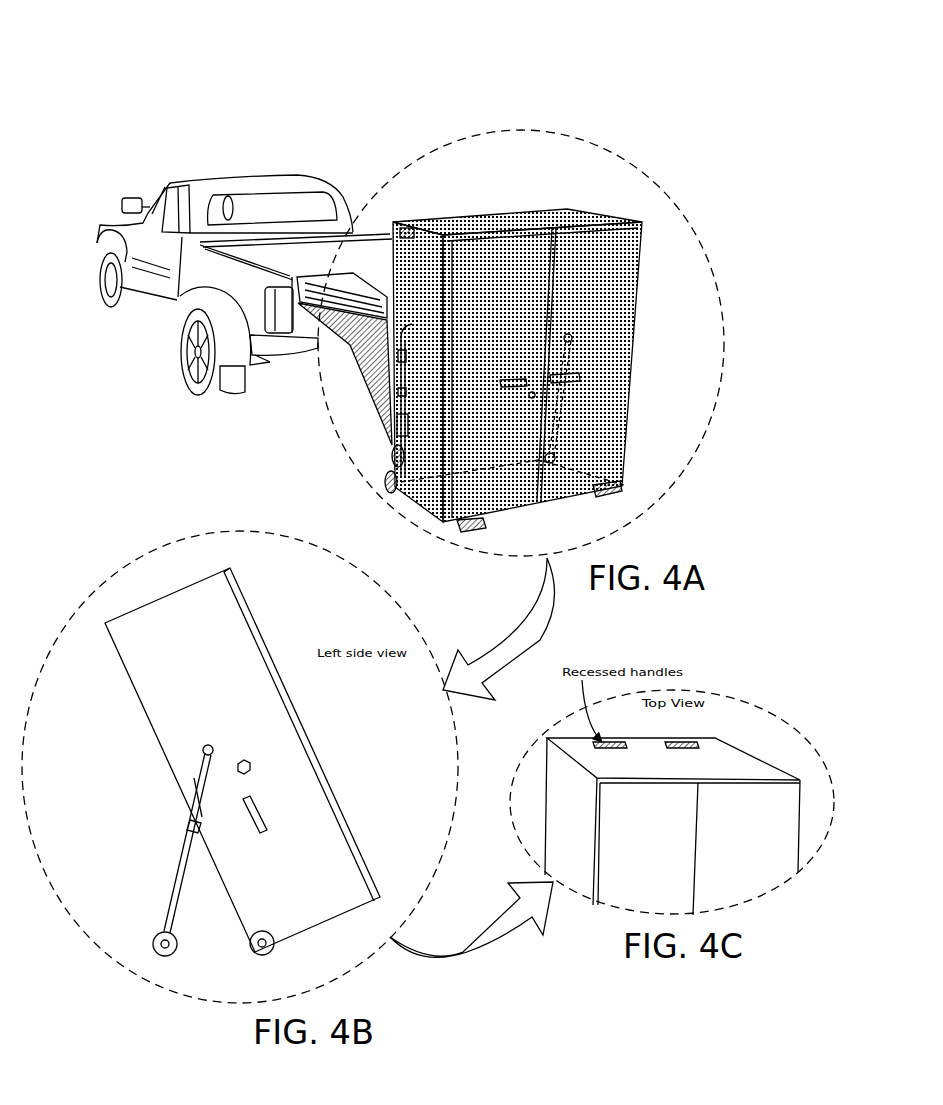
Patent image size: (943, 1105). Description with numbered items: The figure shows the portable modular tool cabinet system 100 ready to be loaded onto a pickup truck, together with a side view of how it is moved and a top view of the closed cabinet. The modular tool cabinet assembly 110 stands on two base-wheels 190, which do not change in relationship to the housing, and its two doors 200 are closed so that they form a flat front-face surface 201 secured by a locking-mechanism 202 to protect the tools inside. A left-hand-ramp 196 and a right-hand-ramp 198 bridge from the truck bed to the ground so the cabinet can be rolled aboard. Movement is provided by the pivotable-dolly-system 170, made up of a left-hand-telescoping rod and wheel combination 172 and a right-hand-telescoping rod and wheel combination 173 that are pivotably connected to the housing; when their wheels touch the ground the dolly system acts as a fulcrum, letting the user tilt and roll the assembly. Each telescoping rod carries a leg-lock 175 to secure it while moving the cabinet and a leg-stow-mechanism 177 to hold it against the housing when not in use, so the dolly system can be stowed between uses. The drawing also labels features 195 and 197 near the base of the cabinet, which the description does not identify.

In FIG. 4A, the portable modular tool cabinet system 100 is at (571, 71).
In FIG. 4A, the modular tool cabinet assembly 110 is at (590, 104).
In FIG. 4B, the modular tool cabinet assembly 110 is at (148, 722).
In FIG. 4C, the modular tool cabinet assembly 110 is at (672, 826).
In FIG. 4A, the pivotable-dolly-system 170 is at (413, 324).
In FIG. 4B, the pivotable-dolly-system 170 is at (200, 760).
In FIG. 4A, the left-hand-telescoping rod and wheel combination 172 is at (394, 392).
In FIG. 4B, the left-hand-telescoping rod and wheel combination 172 is at (180, 842).
In FIG. 4A, the right-hand-telescoping rod and wheel combination 173 is at (568, 347).
In FIG. 4A, the leg-lock 175 is at (389, 357).
In FIG. 4A, the leg-stow-mechanism 177 is at (394, 423).
In FIG. 4A, the base-wheels 190 is at (382, 480).
In FIG. 4B, the base-wheels 190 is at (251, 957).
In FIG. 4A, the skid foot 195 is at (478, 545).
In FIG. 4A, the left-hand-ramp 196 is at (333, 323).
In FIG. 4A, the skid foot 197 is at (609, 500).
In FIG. 4A, the right-hand-ramp 198 is at (355, 280).
In FIG. 4A, the doors 200 is at (592, 182).
In FIG. 4A, the flat front-face surface 201 is at (622, 270).
In FIG. 4A, the locking-mechanism 202 is at (527, 400).